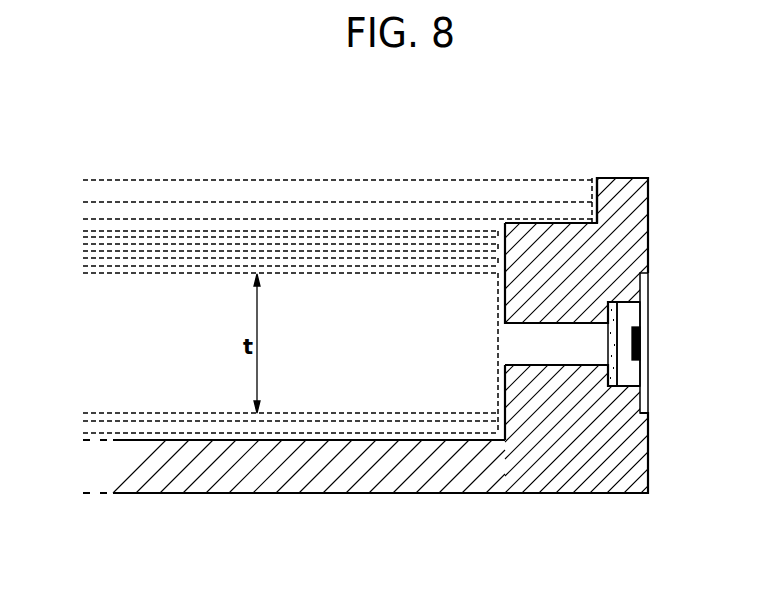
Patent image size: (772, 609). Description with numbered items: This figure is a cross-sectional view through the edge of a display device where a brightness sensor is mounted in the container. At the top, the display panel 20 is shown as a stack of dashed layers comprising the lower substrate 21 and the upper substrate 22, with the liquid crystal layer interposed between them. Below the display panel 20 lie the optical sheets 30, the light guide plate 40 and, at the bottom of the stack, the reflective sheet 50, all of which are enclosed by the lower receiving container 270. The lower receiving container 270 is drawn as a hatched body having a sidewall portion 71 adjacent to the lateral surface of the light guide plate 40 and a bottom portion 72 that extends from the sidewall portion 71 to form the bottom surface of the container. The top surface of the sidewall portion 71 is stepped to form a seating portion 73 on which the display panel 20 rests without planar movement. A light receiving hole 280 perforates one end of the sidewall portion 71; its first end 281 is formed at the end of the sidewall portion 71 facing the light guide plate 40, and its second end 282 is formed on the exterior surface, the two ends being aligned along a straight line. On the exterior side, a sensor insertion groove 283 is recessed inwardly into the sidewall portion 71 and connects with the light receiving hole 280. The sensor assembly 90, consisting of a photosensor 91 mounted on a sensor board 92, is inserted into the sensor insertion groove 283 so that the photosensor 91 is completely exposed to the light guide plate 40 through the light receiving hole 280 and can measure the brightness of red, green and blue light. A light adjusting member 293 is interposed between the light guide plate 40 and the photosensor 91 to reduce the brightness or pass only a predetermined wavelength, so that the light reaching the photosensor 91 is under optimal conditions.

The display panel 20 is at (263, 121).
The lower substrate 21 is at (300, 207).
The upper substrate 22 is at (262, 190).
The optical sheets 30 is at (76, 228).
The light guide plate 40 is at (350, 290).
The reflective sheet 50 is at (223, 427).
The lower receiving container 270 is at (520, 290).
The sidewall portion 71 is at (533, 273).
The bottom portion 72 is at (393, 468).
The seating portion 73 is at (592, 175).
The sensor assembly 90 is at (695, 343).
The photosensor 91 is at (640, 339).
The sensor board 92 is at (647, 298).
The light adjusting member 293 is at (615, 363).
The sensor insertion groove 283 is at (634, 380).
The light receiving hole 280 is at (554, 460).
The first end 281 is at (518, 336).
The second end 282 is at (593, 336).